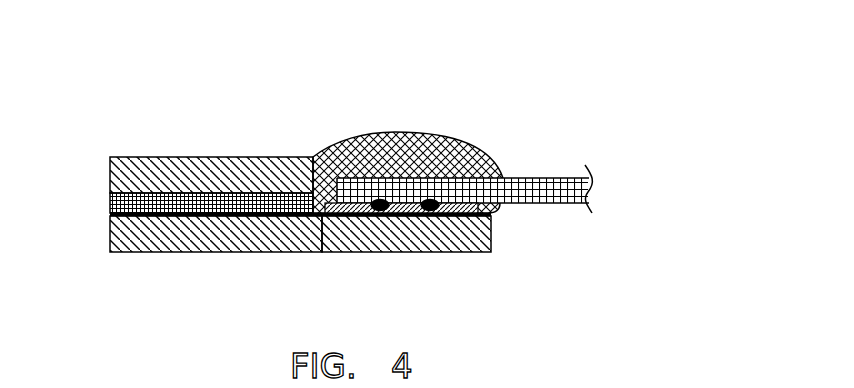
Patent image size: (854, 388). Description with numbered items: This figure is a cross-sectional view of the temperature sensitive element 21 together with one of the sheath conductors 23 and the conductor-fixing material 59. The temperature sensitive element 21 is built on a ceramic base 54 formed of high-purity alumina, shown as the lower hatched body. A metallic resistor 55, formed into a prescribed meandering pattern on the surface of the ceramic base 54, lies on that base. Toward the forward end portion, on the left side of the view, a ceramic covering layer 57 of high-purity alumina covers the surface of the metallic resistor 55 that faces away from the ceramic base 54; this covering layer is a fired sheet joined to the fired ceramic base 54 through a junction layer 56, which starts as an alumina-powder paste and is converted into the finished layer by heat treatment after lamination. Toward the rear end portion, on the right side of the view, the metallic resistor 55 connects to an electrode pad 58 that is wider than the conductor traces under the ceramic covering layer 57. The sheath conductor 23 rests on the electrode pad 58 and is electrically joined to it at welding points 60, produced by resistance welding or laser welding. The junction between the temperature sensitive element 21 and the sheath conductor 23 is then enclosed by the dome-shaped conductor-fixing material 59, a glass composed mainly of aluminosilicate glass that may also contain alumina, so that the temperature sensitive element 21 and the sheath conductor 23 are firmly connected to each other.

The temperature sensitive element 21 is at (284, 68).
The sheath conductor 23 is at (552, 201).
The ceramic base 54 is at (190, 253).
The metallic resistor 55 is at (322, 253).
The junction layer 56 is at (120, 210).
The ceramic covering layer 57 is at (147, 173).
The electrode pad 58 is at (353, 210).
The conductor-fixing material 59 is at (474, 152).
The welding point 60 is at (428, 200).